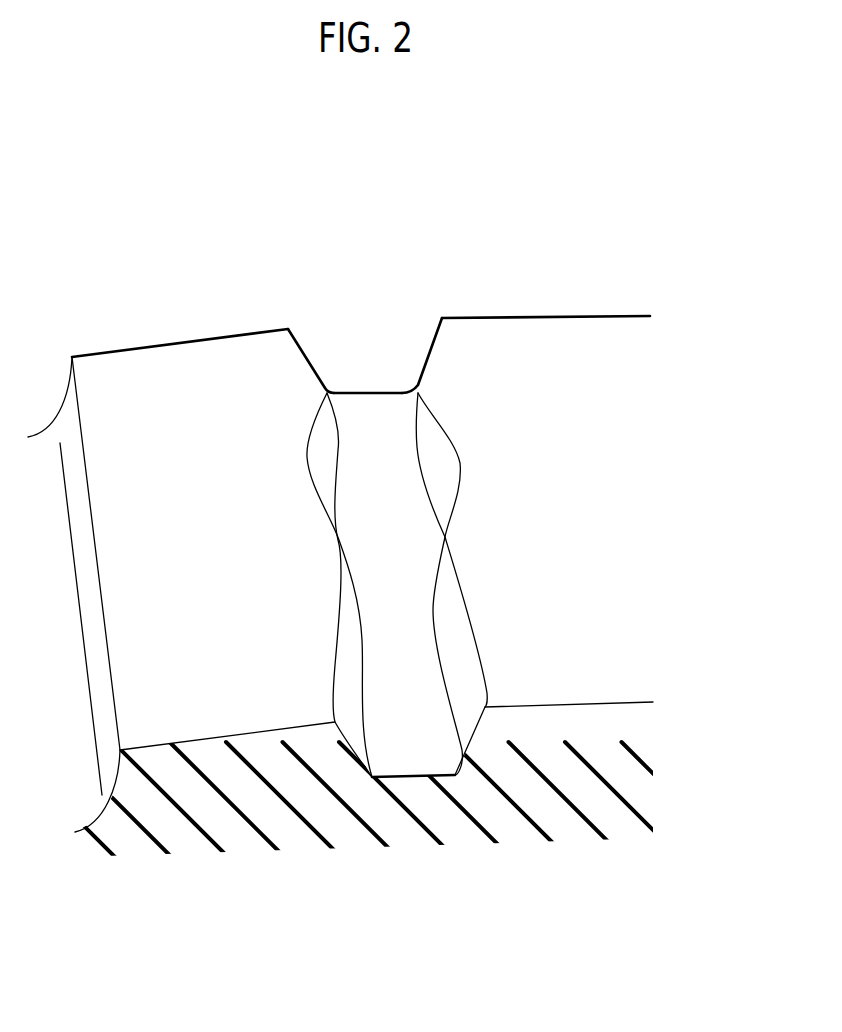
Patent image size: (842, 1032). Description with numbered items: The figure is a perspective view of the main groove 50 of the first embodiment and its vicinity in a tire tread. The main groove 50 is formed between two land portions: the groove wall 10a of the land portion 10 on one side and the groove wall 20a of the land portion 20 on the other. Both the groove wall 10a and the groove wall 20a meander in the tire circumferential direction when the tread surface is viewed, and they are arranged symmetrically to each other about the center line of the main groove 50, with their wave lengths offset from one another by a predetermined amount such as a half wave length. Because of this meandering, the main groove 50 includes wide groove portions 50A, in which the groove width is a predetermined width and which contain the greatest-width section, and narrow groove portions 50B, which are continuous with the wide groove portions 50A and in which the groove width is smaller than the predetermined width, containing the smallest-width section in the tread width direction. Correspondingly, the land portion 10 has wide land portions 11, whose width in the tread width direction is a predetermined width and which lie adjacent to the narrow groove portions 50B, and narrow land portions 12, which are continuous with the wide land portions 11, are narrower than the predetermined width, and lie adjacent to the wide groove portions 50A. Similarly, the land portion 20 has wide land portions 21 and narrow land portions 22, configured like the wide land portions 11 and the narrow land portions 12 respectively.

The land portion 10 is at (200, 357).
The groove wall 10a is at (305, 348).
The wide land portion 11 is at (348, 552).
The narrow land portion 12 is at (320, 463).
The land portion 20 is at (570, 328).
The groove wall 20a is at (430, 337).
The wide land portion 21 is at (440, 536).
The narrow land portion 22 is at (438, 455).
The main groove 50 is at (383, 308).
The wide groove portion 50A is at (535, 382).
The narrow groove portion 50B is at (535, 493).